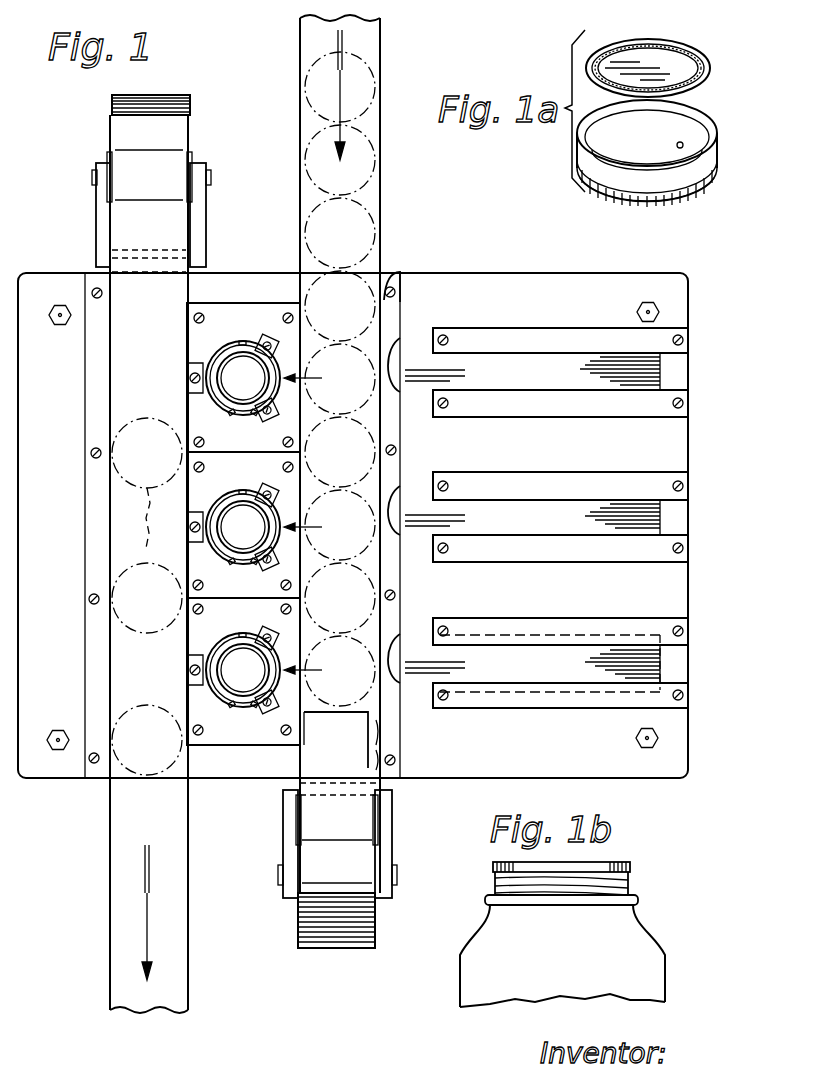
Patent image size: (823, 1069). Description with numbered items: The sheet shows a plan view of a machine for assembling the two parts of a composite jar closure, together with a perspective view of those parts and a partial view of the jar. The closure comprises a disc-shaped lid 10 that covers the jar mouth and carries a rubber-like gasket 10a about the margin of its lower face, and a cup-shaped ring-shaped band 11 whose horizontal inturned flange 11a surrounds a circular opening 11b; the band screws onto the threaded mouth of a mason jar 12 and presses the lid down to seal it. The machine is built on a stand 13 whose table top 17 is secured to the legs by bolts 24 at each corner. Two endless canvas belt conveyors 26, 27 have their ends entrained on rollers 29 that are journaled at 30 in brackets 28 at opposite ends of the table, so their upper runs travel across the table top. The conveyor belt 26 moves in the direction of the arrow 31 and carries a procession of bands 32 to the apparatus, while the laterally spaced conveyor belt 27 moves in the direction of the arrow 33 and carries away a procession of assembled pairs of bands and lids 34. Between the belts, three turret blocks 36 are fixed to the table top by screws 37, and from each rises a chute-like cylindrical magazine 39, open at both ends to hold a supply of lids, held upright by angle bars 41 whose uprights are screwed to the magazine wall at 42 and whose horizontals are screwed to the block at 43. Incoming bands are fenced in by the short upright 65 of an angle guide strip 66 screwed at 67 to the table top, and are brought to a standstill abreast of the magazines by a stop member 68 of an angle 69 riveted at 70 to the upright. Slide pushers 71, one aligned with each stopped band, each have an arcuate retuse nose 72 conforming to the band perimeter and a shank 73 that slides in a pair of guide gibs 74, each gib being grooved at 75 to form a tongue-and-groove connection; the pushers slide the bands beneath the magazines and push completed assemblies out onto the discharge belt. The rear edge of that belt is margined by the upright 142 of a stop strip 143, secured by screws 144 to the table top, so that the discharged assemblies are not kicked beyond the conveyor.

In FIG. 1A, the disc-shaped lid 10 is at (710, 70).
In FIG. 1A, the gasket 10a is at (694, 56).
In FIG. 1A, the ring-shaped band 11 is at (714, 174).
In FIG. 1B, the ring-shaped band 11 is at (632, 881).
In FIG. 1A, the inturned flange 11a is at (704, 147).
In FIG. 1A, the circular opening 11b is at (683, 142).
In FIG. 1B, the jar 12 is at (653, 962).
In FIG. 1, the stand 13 is at (486, 268).
In FIG. 1, the table top 17 is at (541, 286).
In FIG. 1, the bolts 24 is at (58, 303).
In FIG. 1, the endless belt conveyor 26 is at (372, 192).
In FIG. 1, the endless belt conveyor 27 is at (176, 128).
In FIG. 1, the brackets 28 is at (200, 230).
In FIG. 1, the rollers 29 is at (112, 121).
In FIG. 1, the journal 30 is at (94, 177).
In FIG. 1, the arrow 31 is at (343, 94).
In FIG. 1, the procession of bands 32 is at (312, 130).
In FIG. 1, the arrow 33 is at (145, 922).
In FIG. 1, the procession of assembled pairs of bands and lids 34 is at (147, 596).
In FIG. 1, the turret blocks 36 is at (296, 336).
In FIG. 1, the screws 37 is at (207, 306).
In FIG. 1, the cylindrical magazine 39 is at (226, 506).
In FIG. 1, the angle bars 41 is at (262, 342).
In FIG. 1, the screws 42 is at (197, 368).
In FIG. 1, the screws 43 is at (193, 395).
In FIG. 1, the upright 65 is at (401, 270).
In FIG. 1, the angle guide strip 66 is at (400, 310).
In FIG. 1, the screws 67 is at (406, 282).
In FIG. 1, the stop member 68 is at (336, 740).
In FIG. 1, the angle 69 is at (368, 752).
In FIG. 1, the rivets 70 is at (385, 747).
In FIG. 1, the slide pushers 71 is at (408, 350).
In FIG. 1, the nose 72 is at (405, 661).
In FIG. 1, the shank 73 is at (650, 511).
In FIG. 1, the guide gibs 74 is at (572, 336).
In FIG. 1, the groove 75 is at (538, 692).
In FIG. 1, the upright 142 is at (107, 350).
In FIG. 1, the stop strip 143 is at (90, 386).
In FIG. 1, the screws 144 is at (95, 455).